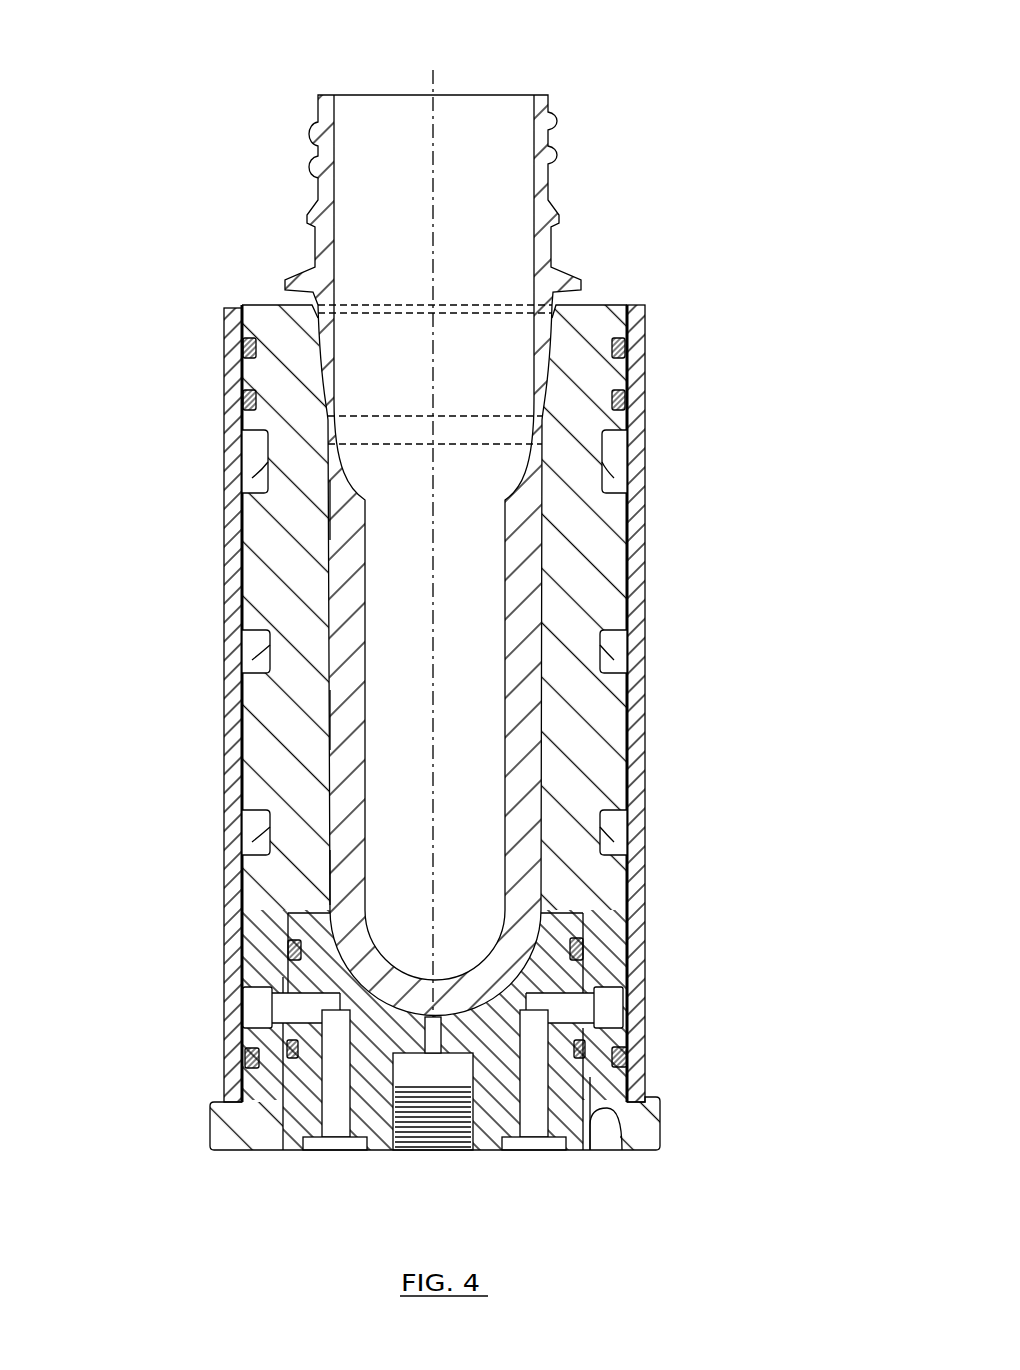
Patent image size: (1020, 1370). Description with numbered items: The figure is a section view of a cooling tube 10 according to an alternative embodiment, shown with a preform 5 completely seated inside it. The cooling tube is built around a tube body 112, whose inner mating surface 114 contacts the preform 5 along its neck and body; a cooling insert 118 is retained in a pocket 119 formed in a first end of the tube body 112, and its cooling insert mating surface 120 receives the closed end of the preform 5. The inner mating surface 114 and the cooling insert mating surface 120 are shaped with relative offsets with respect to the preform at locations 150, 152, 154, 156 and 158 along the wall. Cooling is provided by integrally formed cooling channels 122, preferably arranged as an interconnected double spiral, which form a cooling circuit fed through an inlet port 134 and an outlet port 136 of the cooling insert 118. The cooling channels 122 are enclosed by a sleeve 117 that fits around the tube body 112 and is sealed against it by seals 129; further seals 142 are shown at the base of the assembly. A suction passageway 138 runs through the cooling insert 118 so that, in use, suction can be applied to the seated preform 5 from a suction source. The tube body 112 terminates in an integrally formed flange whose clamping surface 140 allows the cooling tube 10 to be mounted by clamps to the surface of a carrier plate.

The preform 5 is at (471, 75).
The mold assembly 10 is at (187, 298).
The tube body 112 is at (593, 317).
The inner mating surface 114 is at (535, 596).
The sleeve 117 is at (641, 350).
The cooling insert 118 is at (565, 975).
The pocket 119 is at (620, 1148).
The cooling insert mating surface 120 is at (514, 978).
The cooling channels 122 is at (620, 452).
The seals 129 is at (630, 396).
The inlet port 134 is at (540, 1147).
The outlet port 136 is at (334, 1148).
The suction passageway 138 is at (434, 1148).
The clamping surface 140 is at (656, 1101).
The O-ring seal 142 is at (286, 1042).
The offset location 150 is at (242, 381).
The offset location 152 is at (328, 508).
The offset location 154 is at (328, 718).
The offset location 156 is at (328, 873).
The offset location 158 is at (287, 976).